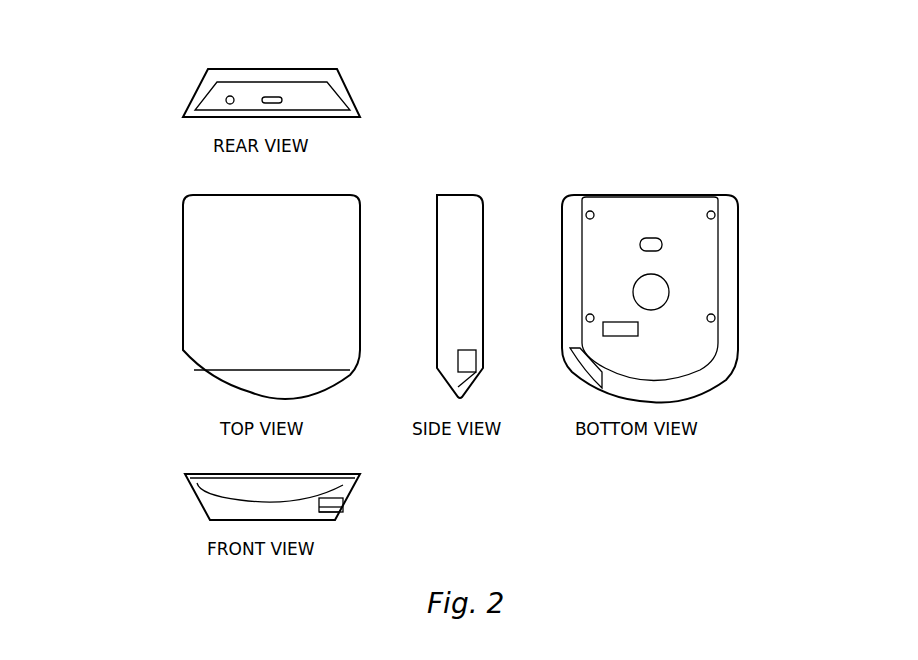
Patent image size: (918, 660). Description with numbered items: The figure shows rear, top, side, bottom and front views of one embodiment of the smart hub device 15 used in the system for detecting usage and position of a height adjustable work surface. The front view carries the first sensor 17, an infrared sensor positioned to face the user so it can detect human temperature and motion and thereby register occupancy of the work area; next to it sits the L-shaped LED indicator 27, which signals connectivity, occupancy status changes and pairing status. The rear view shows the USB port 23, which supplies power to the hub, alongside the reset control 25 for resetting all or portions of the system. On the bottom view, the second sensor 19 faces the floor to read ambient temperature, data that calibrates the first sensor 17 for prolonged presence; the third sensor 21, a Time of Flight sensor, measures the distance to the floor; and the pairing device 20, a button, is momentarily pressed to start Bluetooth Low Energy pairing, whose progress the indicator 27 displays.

The smart hub device 15 is at (183, 268).
The first sensor 17 is at (335, 502).
The second sensor 19 is at (638, 329).
The pairing device 20 is at (669, 288).
The third sensor 21 is at (650, 236).
The USB port 23 is at (283, 100).
The reset control 25 is at (230, 95).
The LED indicator 27 is at (345, 512).